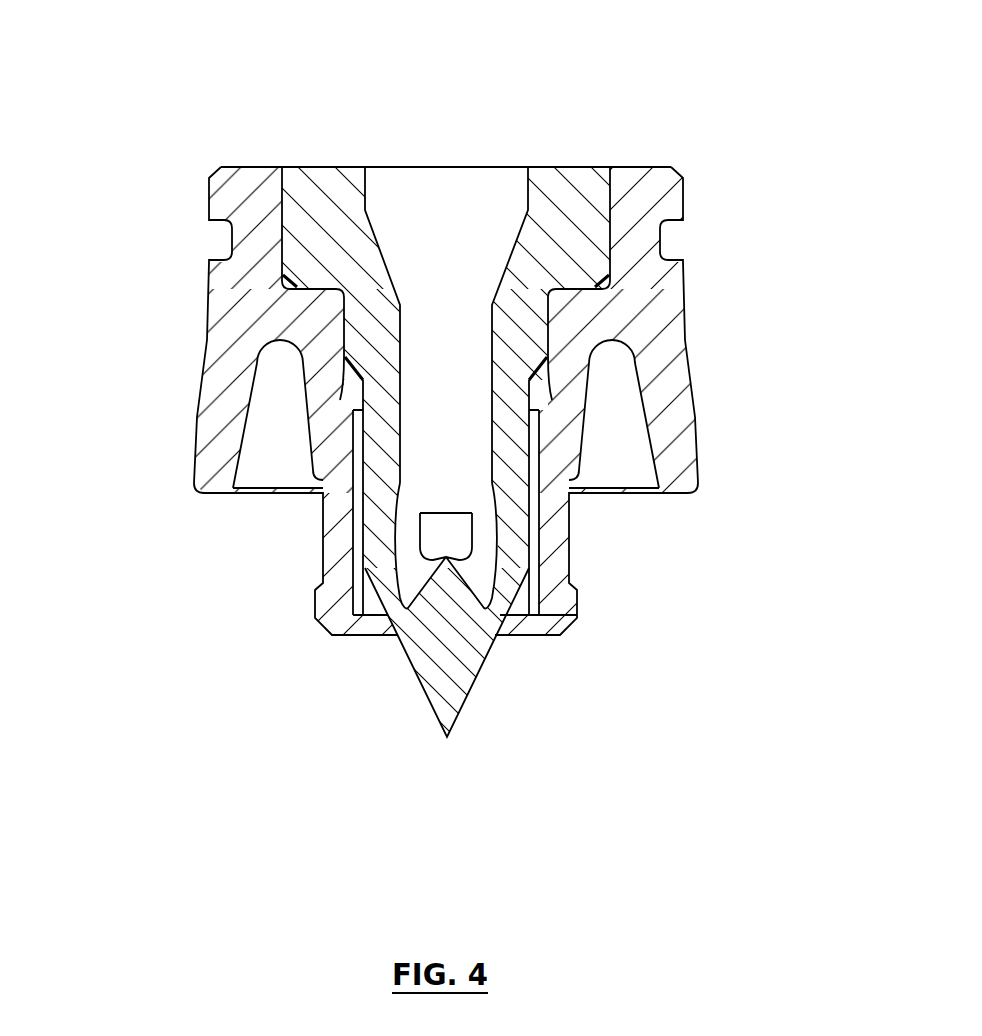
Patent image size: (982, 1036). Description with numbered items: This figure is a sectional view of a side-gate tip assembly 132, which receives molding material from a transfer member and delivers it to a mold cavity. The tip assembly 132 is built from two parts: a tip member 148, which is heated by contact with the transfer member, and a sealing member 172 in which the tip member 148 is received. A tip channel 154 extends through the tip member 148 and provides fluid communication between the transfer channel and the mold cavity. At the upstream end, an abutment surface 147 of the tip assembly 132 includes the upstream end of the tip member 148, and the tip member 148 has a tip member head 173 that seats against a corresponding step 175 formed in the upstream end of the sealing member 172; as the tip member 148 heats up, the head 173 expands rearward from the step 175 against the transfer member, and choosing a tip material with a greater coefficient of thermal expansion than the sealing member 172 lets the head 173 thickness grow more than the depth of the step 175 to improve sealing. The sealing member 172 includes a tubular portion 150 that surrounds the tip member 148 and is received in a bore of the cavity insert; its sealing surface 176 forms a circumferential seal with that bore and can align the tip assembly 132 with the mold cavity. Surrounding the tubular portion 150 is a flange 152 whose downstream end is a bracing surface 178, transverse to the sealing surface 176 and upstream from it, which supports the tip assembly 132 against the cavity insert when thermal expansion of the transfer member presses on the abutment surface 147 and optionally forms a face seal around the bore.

The tip assembly 132 is at (140, 118).
The abutment surface 147 is at (568, 167).
The sealing member 172 is at (708, 357).
The tip member head 173 is at (323, 252).
The tip channel 154 is at (433, 337).
The step 175 is at (572, 288).
The flange 152 is at (690, 462).
The bracing surface 178 is at (675, 495).
The tip member 148 is at (380, 528).
The sealing surface 176 is at (578, 607).
The tubular portion 150 is at (562, 618).